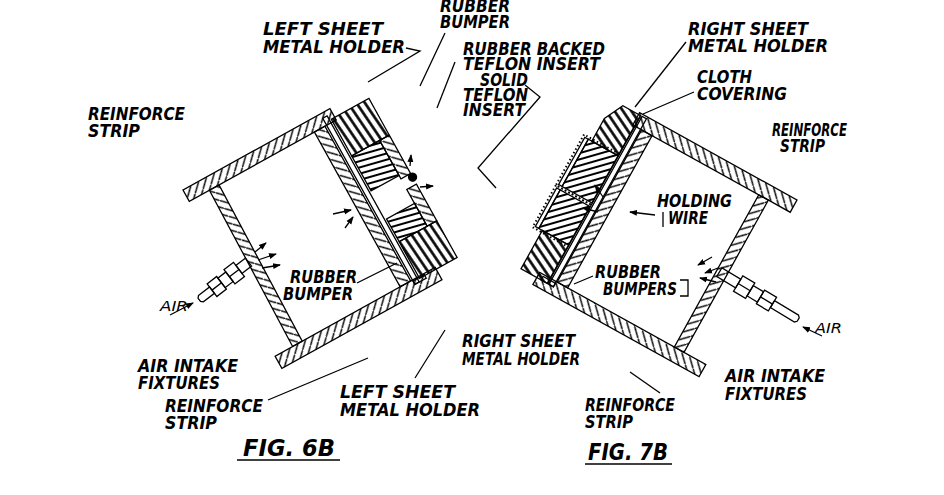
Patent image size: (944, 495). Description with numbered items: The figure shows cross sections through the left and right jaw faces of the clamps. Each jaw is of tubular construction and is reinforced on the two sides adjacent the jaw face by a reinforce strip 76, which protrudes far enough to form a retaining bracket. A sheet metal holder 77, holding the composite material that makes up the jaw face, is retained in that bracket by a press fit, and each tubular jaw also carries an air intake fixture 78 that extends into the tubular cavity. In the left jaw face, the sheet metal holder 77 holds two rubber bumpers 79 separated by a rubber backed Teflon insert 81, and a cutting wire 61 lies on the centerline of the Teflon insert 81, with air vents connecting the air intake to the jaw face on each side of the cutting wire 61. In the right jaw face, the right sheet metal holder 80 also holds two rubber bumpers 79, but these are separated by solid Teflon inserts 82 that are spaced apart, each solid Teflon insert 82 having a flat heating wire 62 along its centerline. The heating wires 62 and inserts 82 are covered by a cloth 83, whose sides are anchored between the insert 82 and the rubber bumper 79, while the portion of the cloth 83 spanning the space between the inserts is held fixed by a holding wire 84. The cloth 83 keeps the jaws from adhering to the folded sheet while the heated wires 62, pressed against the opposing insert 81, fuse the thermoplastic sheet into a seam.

In FIG. 6B, the cutting wire 61 is at (419, 176).
In FIG. 7B, the flat heating wire 62 is at (577, 153).
In FIG. 6B, the reinforce strip 76 is at (190, 117).
In FIG. 7B, the reinforce strip 76 is at (772, 140).
In FIG. 6B, the sheet metal holder 77 is at (348, 110).
In FIG. 6B, the air intake fixture 78 is at (173, 356).
In FIG. 7B, the air intake fixture 78 is at (752, 322).
In FIG. 6B, the rubber bumper 79 is at (375, 126).
In FIG. 7B, the rubber bumper 79 is at (611, 118).
In FIG. 7B, the right sheet metal holder 80 is at (627, 115).
In FIG. 6B, the Teflon insert 81 is at (390, 143).
In FIG. 7B, the solid Teflon insert 82 is at (610, 148).
In FIG. 7B, the cloth 83 is at (590, 193).
In FIG. 7B, the holding wire 84 is at (618, 190).